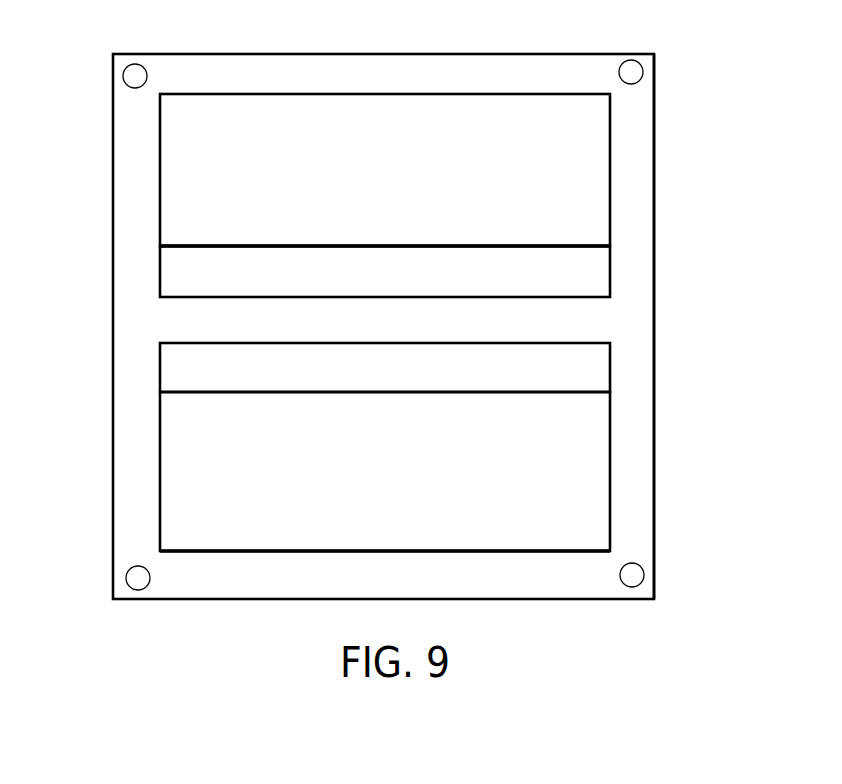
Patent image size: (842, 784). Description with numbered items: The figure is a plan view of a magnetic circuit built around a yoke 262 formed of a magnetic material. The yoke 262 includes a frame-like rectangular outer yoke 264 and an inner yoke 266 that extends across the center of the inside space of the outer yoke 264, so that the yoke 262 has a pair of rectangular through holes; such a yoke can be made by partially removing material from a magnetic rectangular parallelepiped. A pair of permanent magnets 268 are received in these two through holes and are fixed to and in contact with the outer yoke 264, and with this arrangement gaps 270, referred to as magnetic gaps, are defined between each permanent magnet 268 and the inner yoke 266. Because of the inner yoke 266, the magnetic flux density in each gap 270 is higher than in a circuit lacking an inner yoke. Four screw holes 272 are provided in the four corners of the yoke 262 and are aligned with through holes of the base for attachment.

The yoke 262 is at (112, 144).
The outer yoke 264 is at (640, 187).
The inner yoke 266 is at (172, 319).
The permanent magnet 268 is at (588, 129).
The gap 270 is at (588, 271).
The screw hole 272 is at (130, 75).